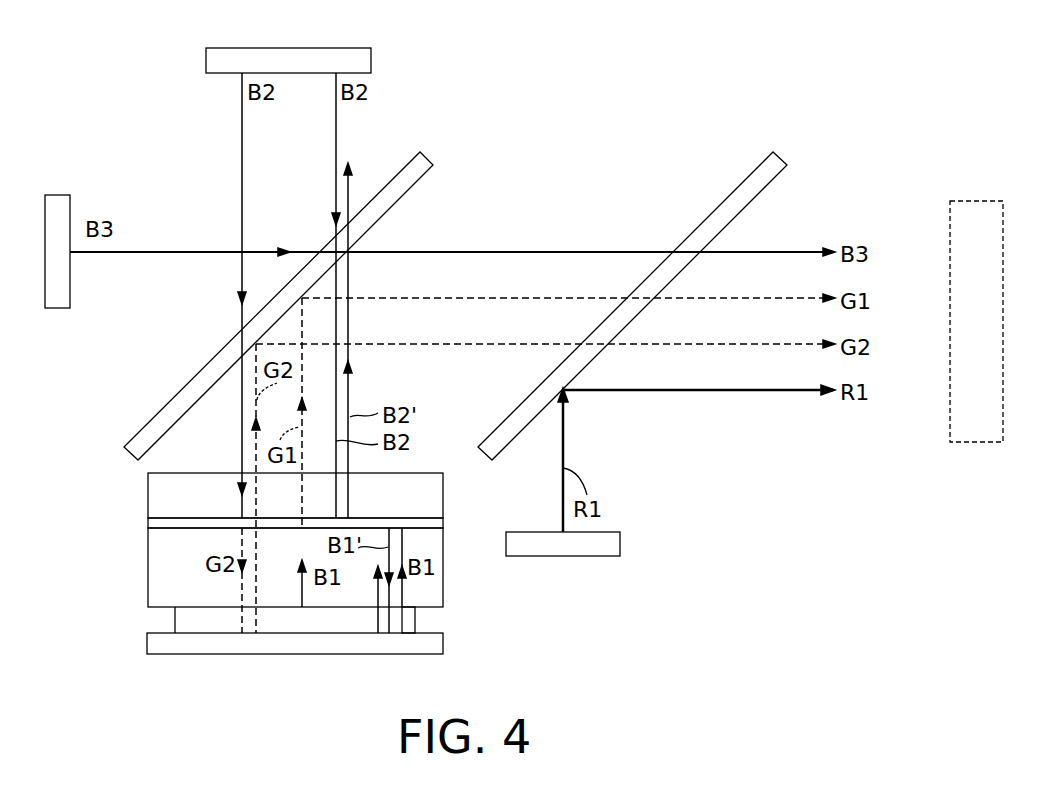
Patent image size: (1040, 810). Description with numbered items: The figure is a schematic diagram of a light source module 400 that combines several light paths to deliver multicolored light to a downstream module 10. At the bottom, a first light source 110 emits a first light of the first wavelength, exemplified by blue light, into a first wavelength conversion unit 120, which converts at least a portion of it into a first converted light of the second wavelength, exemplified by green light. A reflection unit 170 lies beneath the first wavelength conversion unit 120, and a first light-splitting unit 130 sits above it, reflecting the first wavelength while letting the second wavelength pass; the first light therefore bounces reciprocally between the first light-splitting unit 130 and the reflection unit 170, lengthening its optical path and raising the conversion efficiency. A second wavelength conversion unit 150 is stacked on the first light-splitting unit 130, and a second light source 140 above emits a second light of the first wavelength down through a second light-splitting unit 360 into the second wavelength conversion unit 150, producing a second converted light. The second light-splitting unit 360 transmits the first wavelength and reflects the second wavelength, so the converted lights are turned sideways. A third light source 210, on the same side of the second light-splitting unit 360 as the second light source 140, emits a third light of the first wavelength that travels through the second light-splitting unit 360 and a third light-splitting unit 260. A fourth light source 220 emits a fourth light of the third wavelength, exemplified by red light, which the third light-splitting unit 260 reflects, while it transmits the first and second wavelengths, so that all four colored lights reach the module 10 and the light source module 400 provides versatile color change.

The module 10 is at (975, 442).
The first light source 110 is at (195, 621).
The first wavelength conversion unit 120 is at (155, 561).
The first light-splitting unit 130 is at (155, 523).
The second light source 140 is at (357, 59).
The second wavelength conversion unit 150 is at (155, 502).
The reflection unit 170 is at (172, 645).
The third light source 210 is at (58, 202).
The fourth light source 220 is at (597, 543).
The third light-splitting unit 260 is at (763, 170).
The second light-splitting unit 360 is at (417, 163).
The light source module 400 is at (690, 68).